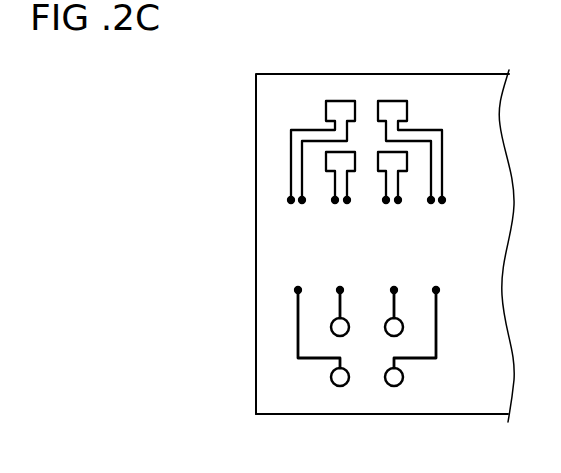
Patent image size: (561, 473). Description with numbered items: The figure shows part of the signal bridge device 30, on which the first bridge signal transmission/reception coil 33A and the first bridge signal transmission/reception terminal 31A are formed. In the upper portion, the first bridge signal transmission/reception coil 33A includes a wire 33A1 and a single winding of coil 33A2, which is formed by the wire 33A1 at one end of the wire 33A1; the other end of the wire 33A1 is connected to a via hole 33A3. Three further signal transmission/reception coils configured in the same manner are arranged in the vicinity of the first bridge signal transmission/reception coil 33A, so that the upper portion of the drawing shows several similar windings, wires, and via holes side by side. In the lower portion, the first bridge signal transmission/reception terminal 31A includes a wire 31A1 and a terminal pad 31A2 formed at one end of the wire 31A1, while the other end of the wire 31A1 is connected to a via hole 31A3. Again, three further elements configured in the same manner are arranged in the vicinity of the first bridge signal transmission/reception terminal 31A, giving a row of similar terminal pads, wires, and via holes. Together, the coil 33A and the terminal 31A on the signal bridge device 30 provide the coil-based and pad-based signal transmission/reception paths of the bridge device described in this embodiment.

The signal bridge device 30 is at (256, 102).
The first bridge signal transmission/reception coil 33A is at (314, 118).
The wire 33A1 is at (291, 160).
The single winding of coil 33A2 is at (337, 100).
The via hole 33A3 is at (291, 200).
The first bridge signal transmission/reception terminal 31A is at (311, 375).
The wire 31A1 is at (298, 341).
The terminal pad 31A2 is at (339, 388).
The via hole 31A3 is at (298, 290).